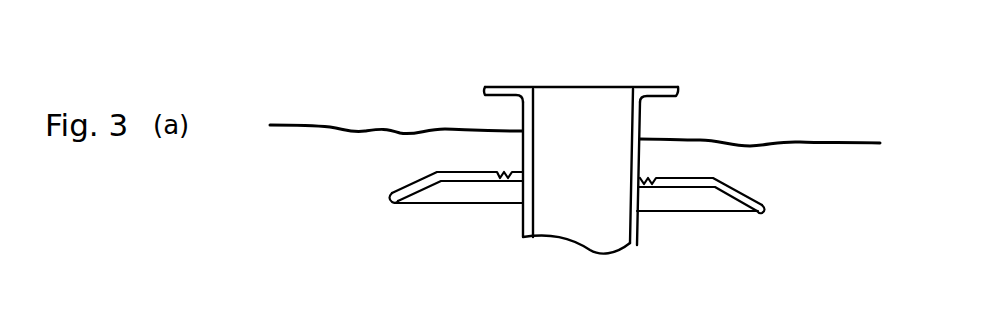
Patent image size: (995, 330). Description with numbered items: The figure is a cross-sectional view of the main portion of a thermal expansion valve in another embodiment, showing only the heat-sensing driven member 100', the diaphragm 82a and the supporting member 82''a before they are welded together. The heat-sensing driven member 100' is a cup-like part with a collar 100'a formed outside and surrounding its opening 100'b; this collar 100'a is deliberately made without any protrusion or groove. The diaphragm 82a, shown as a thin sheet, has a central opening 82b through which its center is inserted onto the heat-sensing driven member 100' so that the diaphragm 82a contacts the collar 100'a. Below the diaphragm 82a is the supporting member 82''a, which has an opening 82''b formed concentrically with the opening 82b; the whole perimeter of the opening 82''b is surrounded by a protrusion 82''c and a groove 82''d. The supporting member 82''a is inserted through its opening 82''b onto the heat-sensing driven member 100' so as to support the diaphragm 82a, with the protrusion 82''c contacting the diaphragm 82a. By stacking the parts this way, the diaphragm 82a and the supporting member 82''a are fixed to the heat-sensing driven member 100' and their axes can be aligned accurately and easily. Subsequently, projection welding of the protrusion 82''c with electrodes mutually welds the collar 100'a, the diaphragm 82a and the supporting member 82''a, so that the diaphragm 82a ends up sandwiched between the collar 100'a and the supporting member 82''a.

The diaphragm 82a is at (322, 125).
The opening 82b is at (640, 137).
The heat-sensing driven member 100' is at (534, 191).
The collar 100'a is at (634, 64).
The opening of the heat-sensing driven member 100'b is at (581, 63).
The supporting member 82''a is at (410, 178).
The opening 82''b is at (576, 246).
The protrusion 82''c is at (739, 183).
The groove 82''d is at (756, 203).